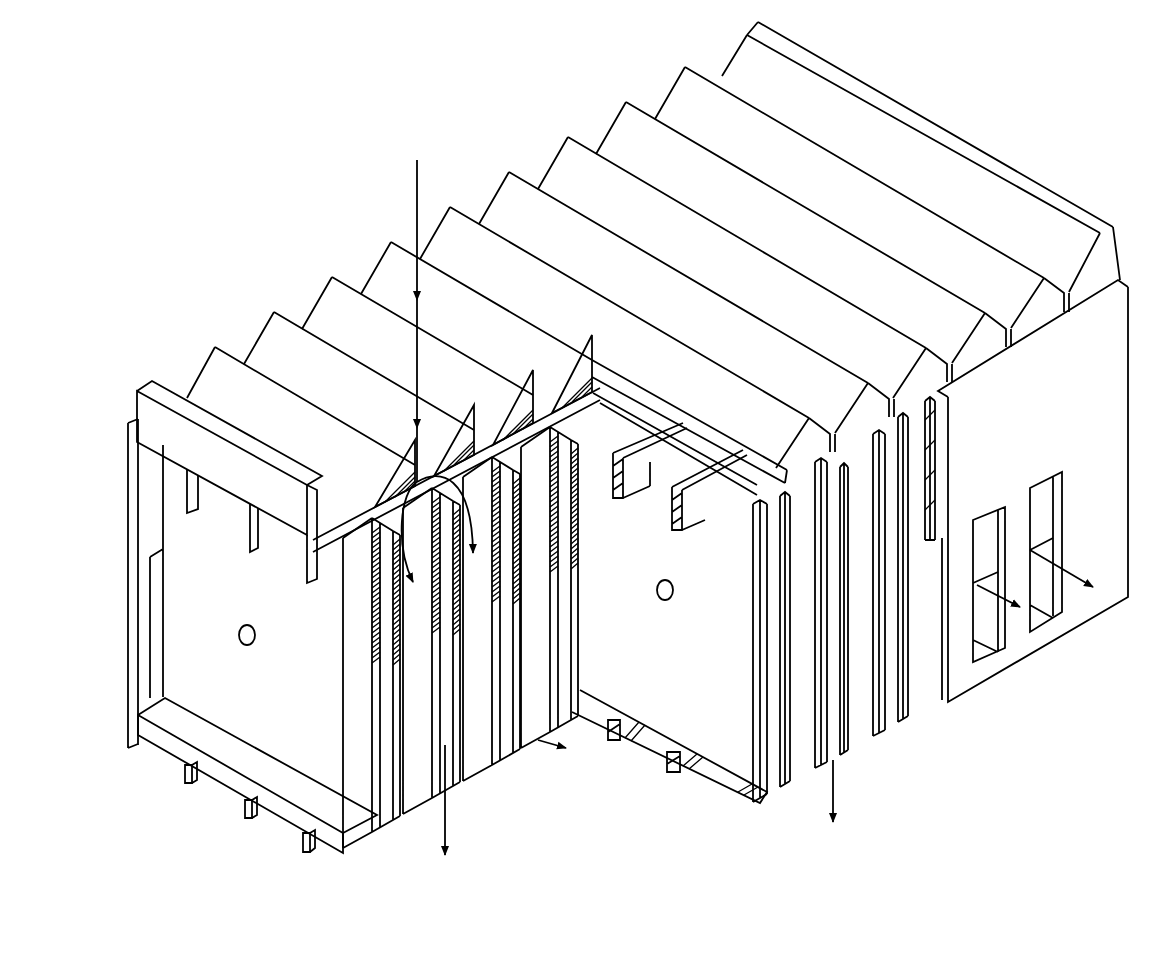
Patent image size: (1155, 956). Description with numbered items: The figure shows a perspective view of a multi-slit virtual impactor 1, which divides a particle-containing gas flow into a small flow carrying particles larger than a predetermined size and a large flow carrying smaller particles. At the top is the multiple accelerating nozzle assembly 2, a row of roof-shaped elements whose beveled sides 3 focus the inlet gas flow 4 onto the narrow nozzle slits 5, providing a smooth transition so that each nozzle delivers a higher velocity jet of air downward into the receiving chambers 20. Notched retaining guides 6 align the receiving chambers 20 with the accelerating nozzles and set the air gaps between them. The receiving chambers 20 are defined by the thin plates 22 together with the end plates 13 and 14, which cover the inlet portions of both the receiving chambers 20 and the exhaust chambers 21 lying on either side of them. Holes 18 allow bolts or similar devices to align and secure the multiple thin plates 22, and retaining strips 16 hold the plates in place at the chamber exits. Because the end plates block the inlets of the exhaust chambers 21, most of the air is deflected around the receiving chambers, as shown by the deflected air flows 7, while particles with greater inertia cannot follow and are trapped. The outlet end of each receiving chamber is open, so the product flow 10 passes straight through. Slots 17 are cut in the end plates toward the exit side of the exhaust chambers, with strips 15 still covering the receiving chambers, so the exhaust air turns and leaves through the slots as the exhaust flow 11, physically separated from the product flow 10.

The virtual impactor 1 is at (1052, 100).
The multiple accelerating nozzle assembly 2 is at (153, 336).
The beveled sides 3 is at (313, 317).
The inlet gas flow 4 is at (417, 200).
The nozzle slits 5 is at (538, 407).
The notched retaining guides 6 is at (307, 565).
The deflected air flows 7 is at (377, 590).
The product flow 10 is at (453, 832).
The exhaust flow 11 is at (540, 745).
The end plate 13 is at (128, 518).
The end plate 14 is at (1050, 410).
The strips 15 is at (1012, 627).
The retaining strips 16 is at (348, 853).
The slots 17 is at (1045, 505).
The holes 18 is at (252, 645).
The receiving chambers 20 is at (420, 647).
The exhaust chambers 21 is at (438, 815).
The thin plates 22 is at (388, 692).